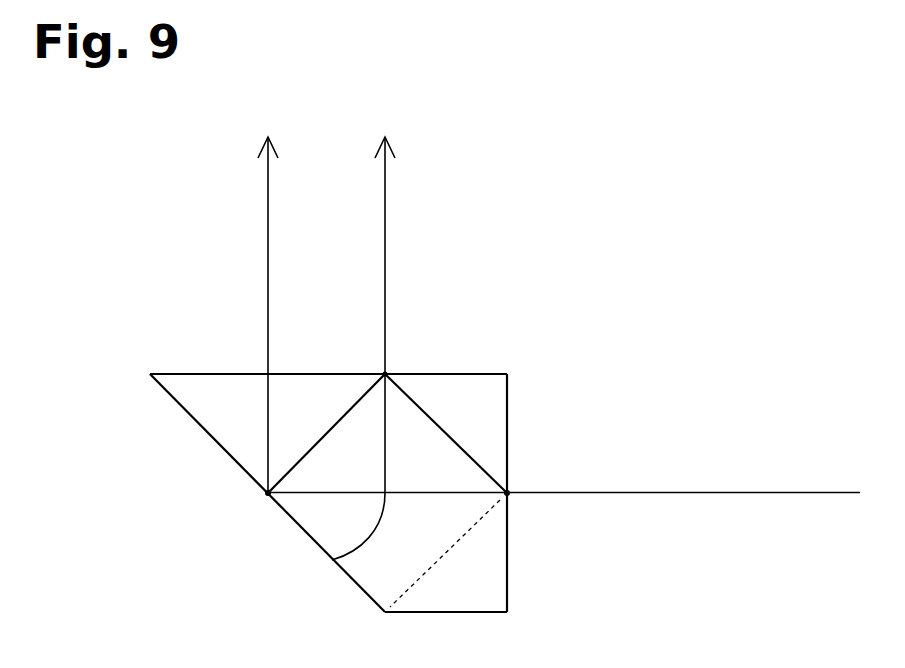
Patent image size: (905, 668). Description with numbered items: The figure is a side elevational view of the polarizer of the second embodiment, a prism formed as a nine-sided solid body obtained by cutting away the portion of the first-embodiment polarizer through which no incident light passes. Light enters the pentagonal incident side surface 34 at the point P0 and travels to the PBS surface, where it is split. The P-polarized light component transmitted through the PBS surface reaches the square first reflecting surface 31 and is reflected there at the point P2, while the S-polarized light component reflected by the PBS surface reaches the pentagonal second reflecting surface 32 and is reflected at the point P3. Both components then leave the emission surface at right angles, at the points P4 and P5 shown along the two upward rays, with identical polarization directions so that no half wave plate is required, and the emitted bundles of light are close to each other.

The first reflecting surface 31 is at (222, 450).
The second reflecting surface 32 is at (382, 558).
The incident side surface 34 is at (508, 440).
The incident point P0 is at (508, 495).
The reflection point on first reflecting surface P2 is at (265, 496).
The reflection point on second reflecting surface P3 is at (332, 560).
The exit point of first ray P4 is at (268, 374).
The exit point of second ray P5 is at (385, 374).